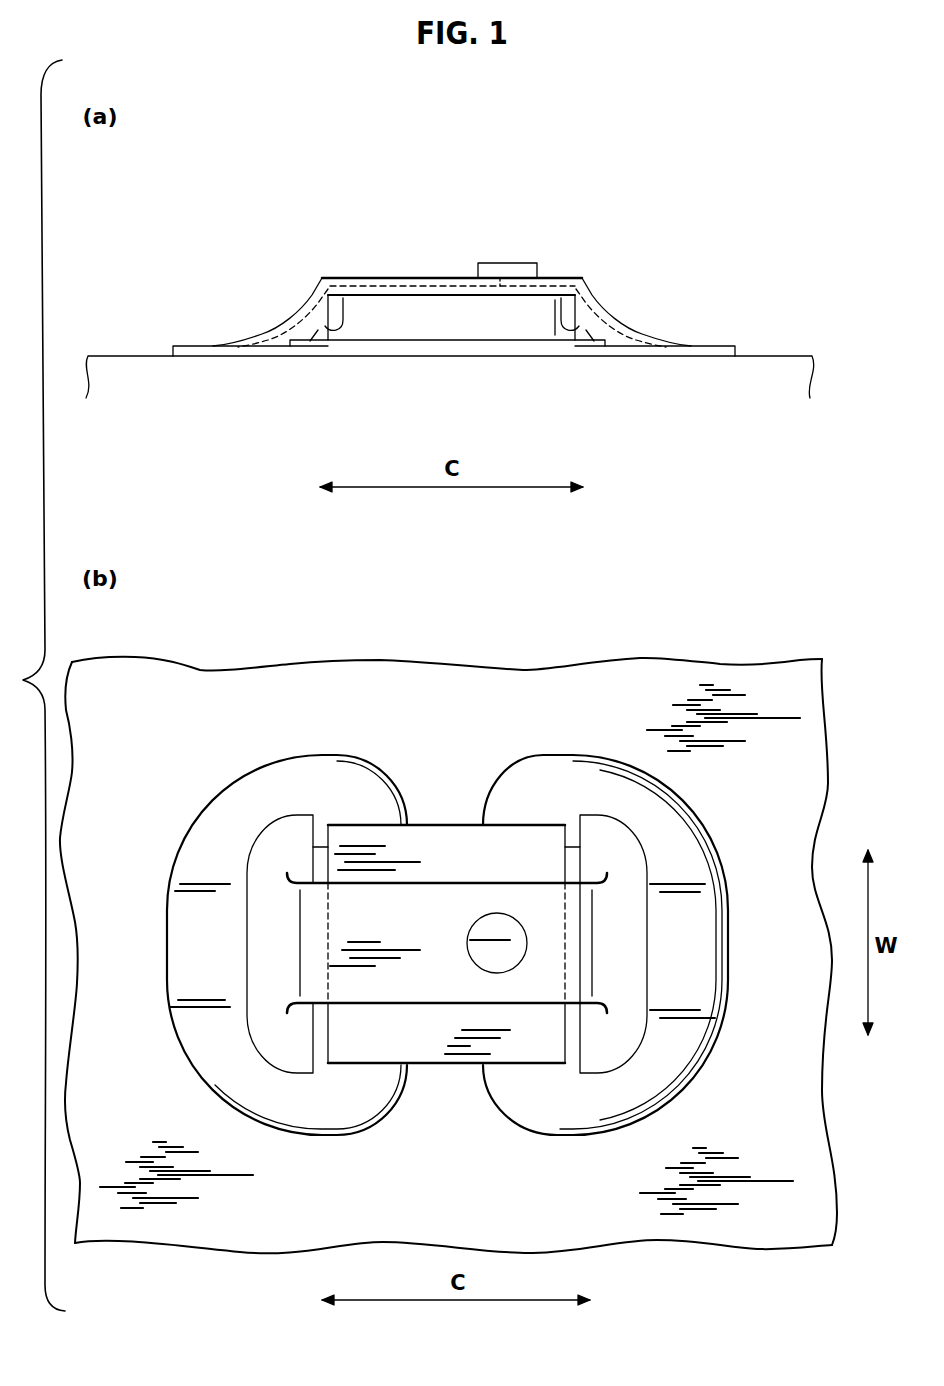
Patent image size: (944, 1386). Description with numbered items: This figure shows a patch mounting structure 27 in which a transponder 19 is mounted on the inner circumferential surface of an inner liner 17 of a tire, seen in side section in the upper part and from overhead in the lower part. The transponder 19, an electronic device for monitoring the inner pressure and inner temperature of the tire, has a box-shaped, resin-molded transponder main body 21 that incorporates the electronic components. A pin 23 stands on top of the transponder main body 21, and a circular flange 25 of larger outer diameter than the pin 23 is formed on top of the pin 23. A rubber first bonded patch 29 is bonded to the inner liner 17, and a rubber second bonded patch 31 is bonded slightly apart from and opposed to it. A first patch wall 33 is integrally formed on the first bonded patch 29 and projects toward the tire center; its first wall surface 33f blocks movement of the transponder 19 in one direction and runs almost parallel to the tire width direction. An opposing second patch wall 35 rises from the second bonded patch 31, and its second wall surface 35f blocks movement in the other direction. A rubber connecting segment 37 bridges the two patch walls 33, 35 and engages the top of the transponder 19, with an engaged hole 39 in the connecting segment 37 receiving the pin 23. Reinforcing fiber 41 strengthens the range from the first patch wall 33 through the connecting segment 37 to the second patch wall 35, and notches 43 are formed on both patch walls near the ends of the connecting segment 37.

The inner liner 17 is at (127, 355).
The transponder 19 is at (455, 342).
The transponder main body 21 is at (360, 322).
The pin 23 is at (540, 298).
The circular flange 25 is at (495, 262).
The patch mounting structure 27 is at (625, 217).
The first bonded patch 29 is at (210, 346).
The second bonded patch 31 is at (700, 345).
The first patch wall 33 is at (295, 317).
The first wall surface 33f is at (340, 302).
The second patch wall 35 is at (613, 307).
The second wall surface 35f is at (558, 320).
The connecting segment 37 is at (418, 277).
The engaged hole 39 is at (507, 285).
The reinforcing fiber 41 is at (390, 286).
The notches 43 is at (318, 330).